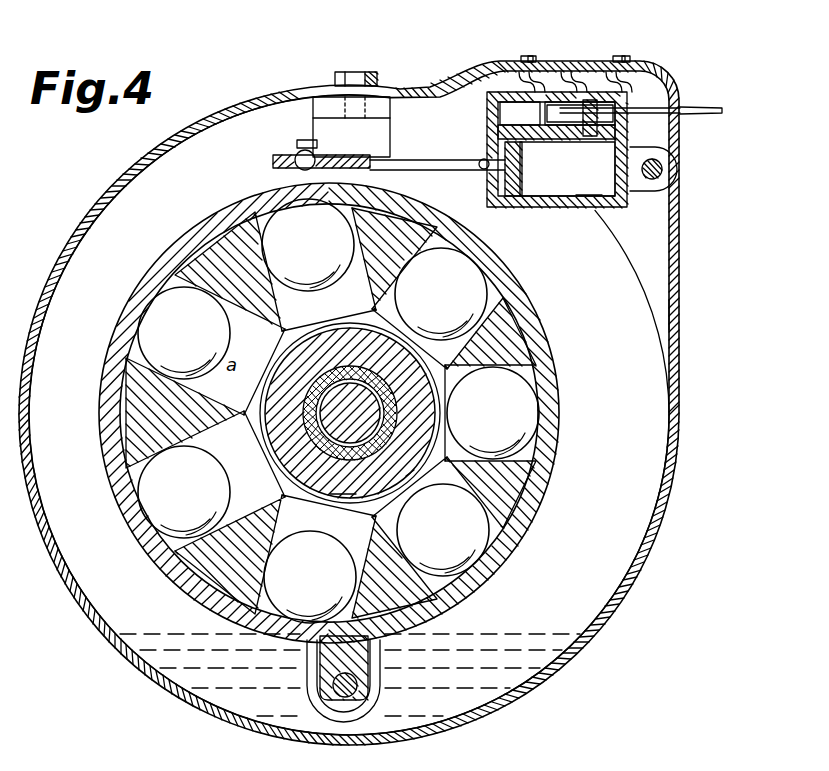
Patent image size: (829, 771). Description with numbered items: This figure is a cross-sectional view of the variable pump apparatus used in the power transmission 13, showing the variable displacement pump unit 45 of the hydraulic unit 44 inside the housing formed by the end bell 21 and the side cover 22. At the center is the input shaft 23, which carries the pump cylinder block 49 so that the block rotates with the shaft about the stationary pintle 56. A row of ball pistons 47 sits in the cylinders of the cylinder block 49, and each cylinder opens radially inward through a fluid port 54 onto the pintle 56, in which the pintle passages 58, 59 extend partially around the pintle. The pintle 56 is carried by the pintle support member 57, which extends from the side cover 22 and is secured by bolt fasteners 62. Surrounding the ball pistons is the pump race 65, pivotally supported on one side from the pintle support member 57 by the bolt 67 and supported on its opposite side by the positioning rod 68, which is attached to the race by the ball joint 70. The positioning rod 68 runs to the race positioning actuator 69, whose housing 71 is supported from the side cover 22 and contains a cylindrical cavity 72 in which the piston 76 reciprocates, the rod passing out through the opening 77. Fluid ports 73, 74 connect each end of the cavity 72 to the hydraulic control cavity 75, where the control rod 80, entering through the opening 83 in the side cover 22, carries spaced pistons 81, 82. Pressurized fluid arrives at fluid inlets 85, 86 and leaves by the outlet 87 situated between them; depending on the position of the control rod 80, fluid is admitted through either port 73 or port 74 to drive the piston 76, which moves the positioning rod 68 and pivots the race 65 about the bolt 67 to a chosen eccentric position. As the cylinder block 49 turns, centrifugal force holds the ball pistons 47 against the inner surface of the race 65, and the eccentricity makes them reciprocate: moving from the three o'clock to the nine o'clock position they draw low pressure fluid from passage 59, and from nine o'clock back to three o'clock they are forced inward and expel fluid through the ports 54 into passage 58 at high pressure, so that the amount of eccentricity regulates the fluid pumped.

The power transmission 13 is at (732, 203).
The end bell 21 is at (662, 453).
The side cover 22 is at (681, 318).
The input shaft 23 is at (352, 386).
The hydraulic unit 44 is at (556, 310).
The variable displacement pump unit 45 is at (572, 458).
The ball pistons 47 is at (452, 302).
The pump cylinder block 49 is at (543, 348).
The fluid ports 54 is at (262, 438).
The pintle 56 is at (428, 416).
The pintle support member 57 is at (372, 143).
The pintle passage 58 is at (420, 375).
The pintle passage 59 is at (344, 484).
The bolt fasteners 62 is at (360, 80).
The pump race 65 is at (557, 405).
The bolt 67 is at (316, 735).
The positioning rod 68 is at (418, 172).
The race positioning actuator 69 is at (591, 142).
The ball joint 70 is at (292, 152).
The housing 71 is at (613, 204).
The cylindrical cavity 72 is at (567, 169).
The fluid port 73 is at (630, 136).
The fluid port 74 is at (500, 131).
The hydraulic control cavity 75 is at (510, 110).
The piston 76 is at (522, 183).
The opening 77 is at (486, 163).
The control rod 80 is at (622, 112).
The piston 81 is at (538, 80).
The piston 82 is at (628, 50).
The opening 83 is at (690, 108).
The fluid inlet 85 is at (528, 58).
The fluid inlet 86 is at (632, 58).
The outlet 87 is at (588, 100).